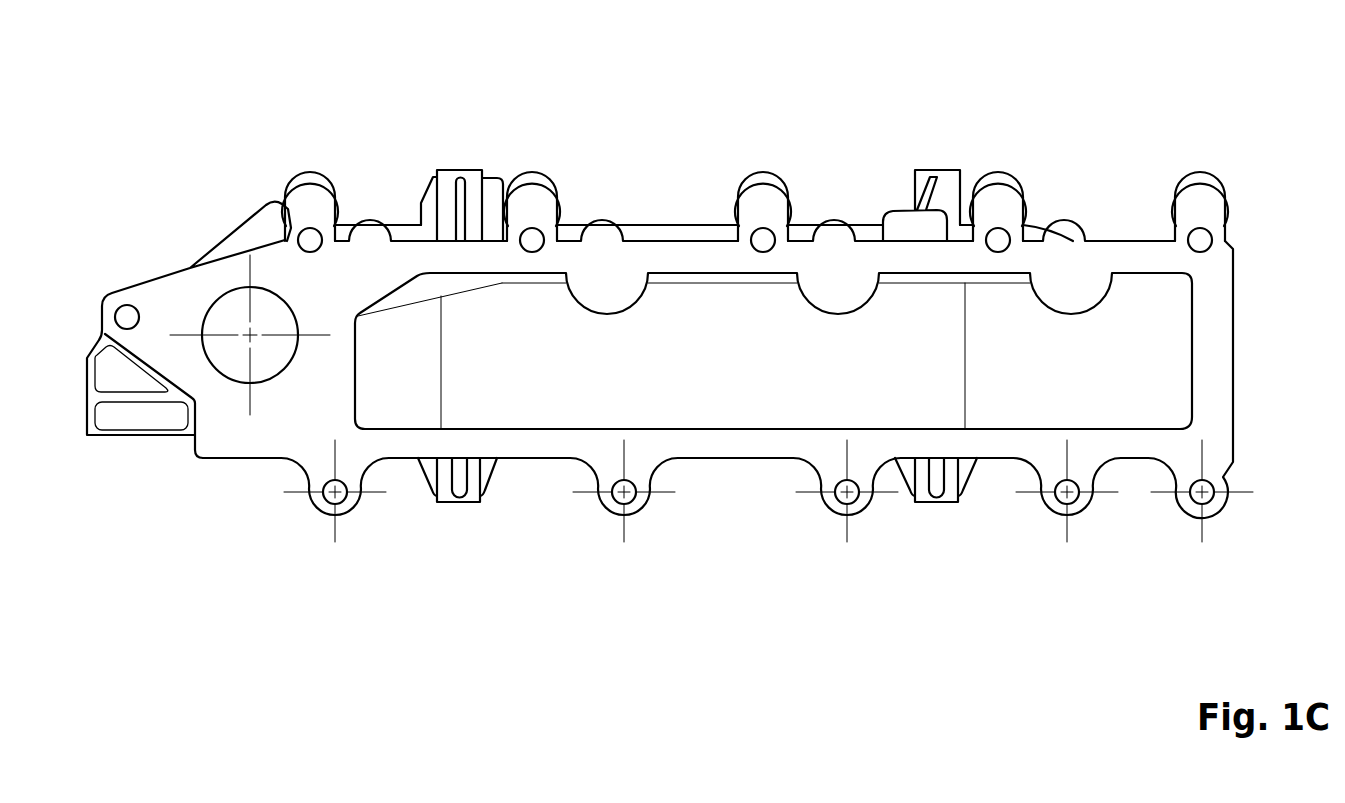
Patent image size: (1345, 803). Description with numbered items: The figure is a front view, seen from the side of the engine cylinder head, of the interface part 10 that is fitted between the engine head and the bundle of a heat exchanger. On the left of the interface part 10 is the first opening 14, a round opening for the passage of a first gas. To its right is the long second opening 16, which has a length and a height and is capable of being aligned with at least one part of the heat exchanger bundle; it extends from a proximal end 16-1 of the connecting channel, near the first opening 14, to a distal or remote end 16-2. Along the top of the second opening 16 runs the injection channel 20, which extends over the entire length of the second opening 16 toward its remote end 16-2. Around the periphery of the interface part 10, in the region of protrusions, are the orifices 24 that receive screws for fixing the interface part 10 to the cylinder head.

The interface part 10 is at (452, 122).
The first opening 14 is at (231, 370).
The second opening 16 is at (719, 395).
The proximal end 16-1 is at (365, 372).
The distal end 16-2 is at (1182, 350).
The injection channel 20 is at (690, 280).
The orifices 24 is at (1049, 518).